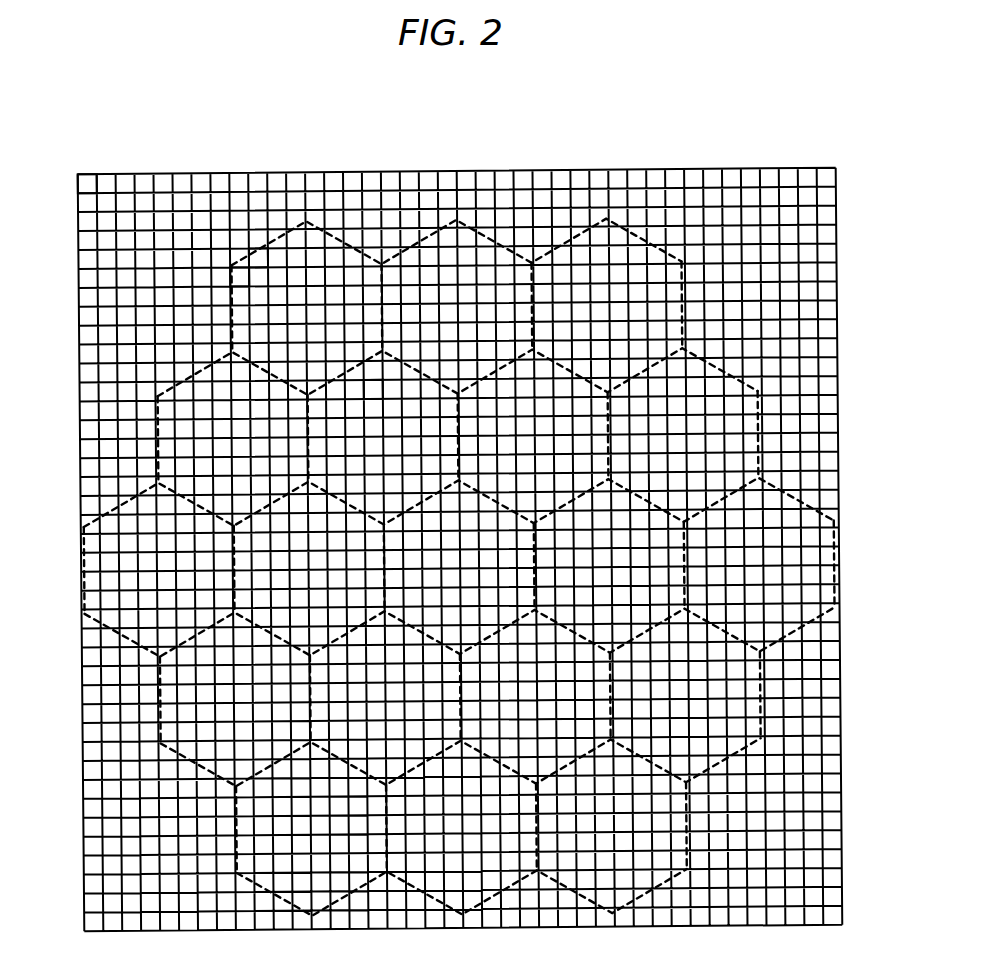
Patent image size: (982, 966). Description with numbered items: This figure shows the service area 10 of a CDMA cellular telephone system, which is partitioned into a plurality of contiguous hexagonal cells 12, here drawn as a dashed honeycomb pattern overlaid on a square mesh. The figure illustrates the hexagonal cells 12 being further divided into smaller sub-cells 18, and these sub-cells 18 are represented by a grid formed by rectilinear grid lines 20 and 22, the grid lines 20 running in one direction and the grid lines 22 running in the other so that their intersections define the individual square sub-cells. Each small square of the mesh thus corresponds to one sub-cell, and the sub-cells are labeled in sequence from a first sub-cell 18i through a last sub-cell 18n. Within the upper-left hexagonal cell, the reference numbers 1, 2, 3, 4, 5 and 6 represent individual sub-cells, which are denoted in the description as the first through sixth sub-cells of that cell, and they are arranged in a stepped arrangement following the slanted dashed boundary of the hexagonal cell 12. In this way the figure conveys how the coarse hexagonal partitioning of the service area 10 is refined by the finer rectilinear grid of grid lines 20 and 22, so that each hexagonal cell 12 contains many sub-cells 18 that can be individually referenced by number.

The service area 10 is at (438, 130).
The hexagonal cell 12 is at (337, 237).
The sub-cell 18 is at (278, 258).
The sub-cell 18i is at (245, 278).
The sub-cell 18n is at (337, 350).
The rectilinear grid line 20 is at (78, 242).
The rectilinear grid line 22 is at (95, 183).
The individual sub-cell 1 is at (276, 280).
The individual sub-cell 2 is at (294, 296).
The individual sub-cell 3 is at (312, 317).
The individual sub-cell 4 is at (332, 317).
The individual sub-cell 5 is at (350, 317).
The individual sub-cell 6 is at (350, 334).